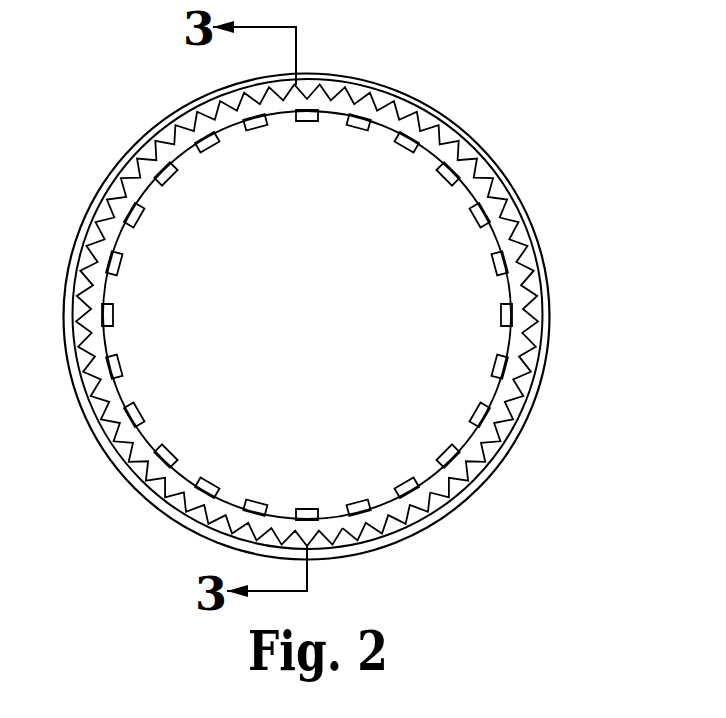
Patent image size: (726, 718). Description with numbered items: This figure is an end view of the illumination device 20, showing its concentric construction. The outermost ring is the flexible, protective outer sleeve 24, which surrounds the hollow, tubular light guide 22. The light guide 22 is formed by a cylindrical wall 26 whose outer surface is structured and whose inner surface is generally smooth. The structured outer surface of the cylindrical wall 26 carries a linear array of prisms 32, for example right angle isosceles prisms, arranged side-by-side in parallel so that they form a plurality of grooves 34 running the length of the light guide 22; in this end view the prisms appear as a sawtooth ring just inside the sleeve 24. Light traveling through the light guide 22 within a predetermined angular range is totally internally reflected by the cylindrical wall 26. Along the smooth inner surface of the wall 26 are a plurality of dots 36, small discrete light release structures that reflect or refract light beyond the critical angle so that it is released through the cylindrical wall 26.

The illumination device 20 is at (351, 326).
The light guide 22 is at (350, 315).
The protective outer sleeve 24 is at (532, 228).
The cylindrical wall 26 is at (140, 445).
The prisms 32 is at (390, 521).
The grooves 34 is at (397, 538).
The dots 36 is at (138, 217).